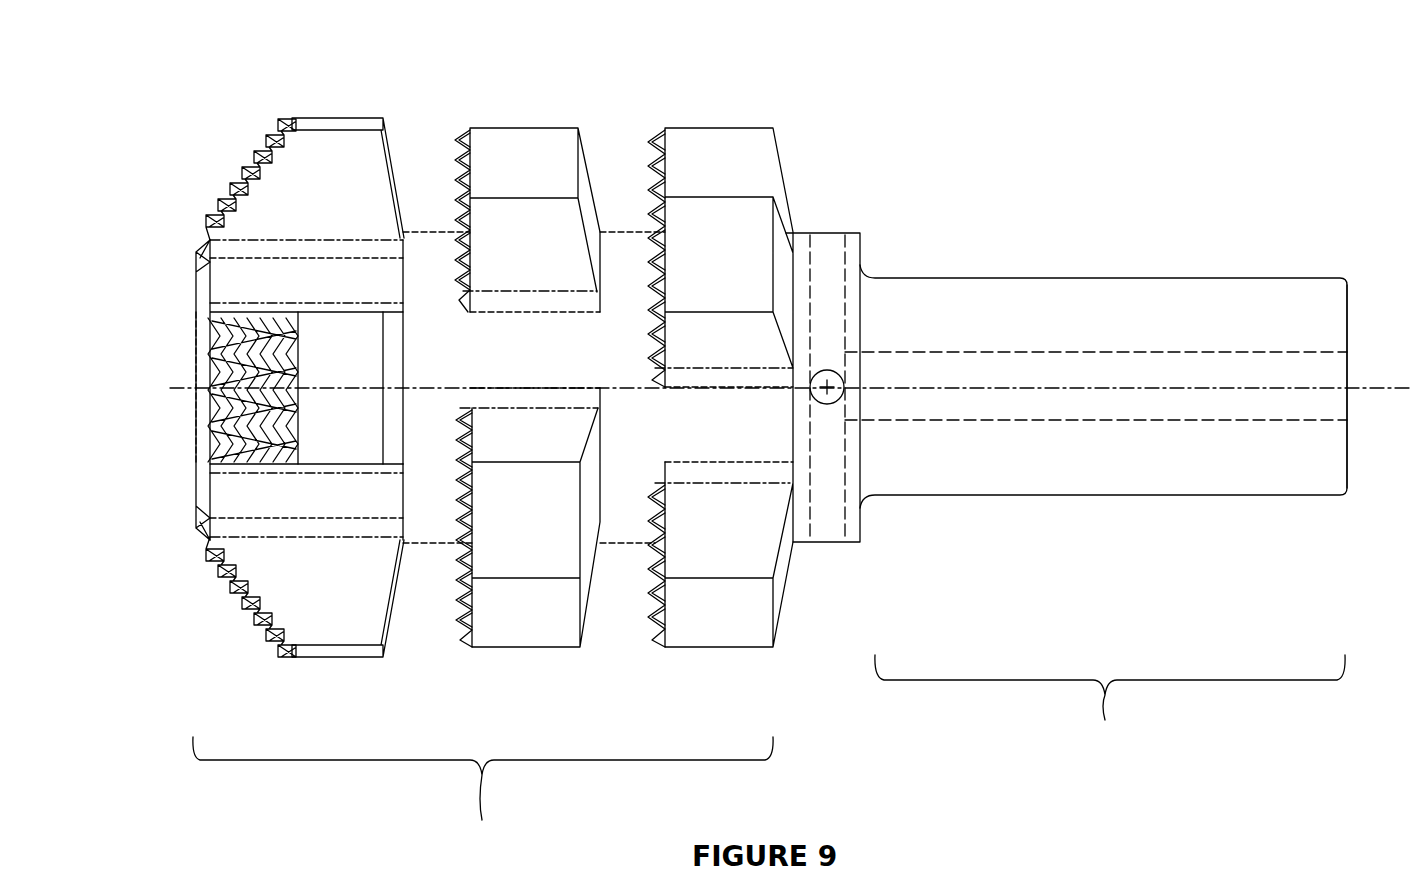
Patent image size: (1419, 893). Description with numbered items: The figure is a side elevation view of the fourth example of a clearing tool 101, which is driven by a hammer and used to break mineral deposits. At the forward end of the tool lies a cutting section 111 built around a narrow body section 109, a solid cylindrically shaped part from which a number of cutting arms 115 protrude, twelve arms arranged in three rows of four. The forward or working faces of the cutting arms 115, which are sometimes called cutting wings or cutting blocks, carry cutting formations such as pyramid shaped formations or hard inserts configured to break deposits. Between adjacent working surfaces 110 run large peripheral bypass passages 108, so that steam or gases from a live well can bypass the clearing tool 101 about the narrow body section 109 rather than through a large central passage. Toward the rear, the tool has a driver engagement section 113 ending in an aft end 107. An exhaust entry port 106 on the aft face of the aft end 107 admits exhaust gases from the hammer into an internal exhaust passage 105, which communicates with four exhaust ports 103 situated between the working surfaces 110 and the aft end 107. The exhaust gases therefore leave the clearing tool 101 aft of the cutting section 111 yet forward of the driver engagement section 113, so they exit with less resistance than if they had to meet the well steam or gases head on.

The clearing tool 101 is at (168, 116).
The exhaust ports 103 is at (825, 230).
The internal exhaust passage 105 is at (1050, 345).
The exhaust entry port 106 is at (1364, 412).
The aft end 107 is at (1362, 309).
The peripheral bypass passages 108 is at (275, 503).
The body section 109 is at (465, 342).
The working surfaces 110 is at (247, 605).
The cutting section 111 is at (483, 798).
The driver engagement section 113 is at (1110, 713).
The cutting arms 115 is at (587, 163).